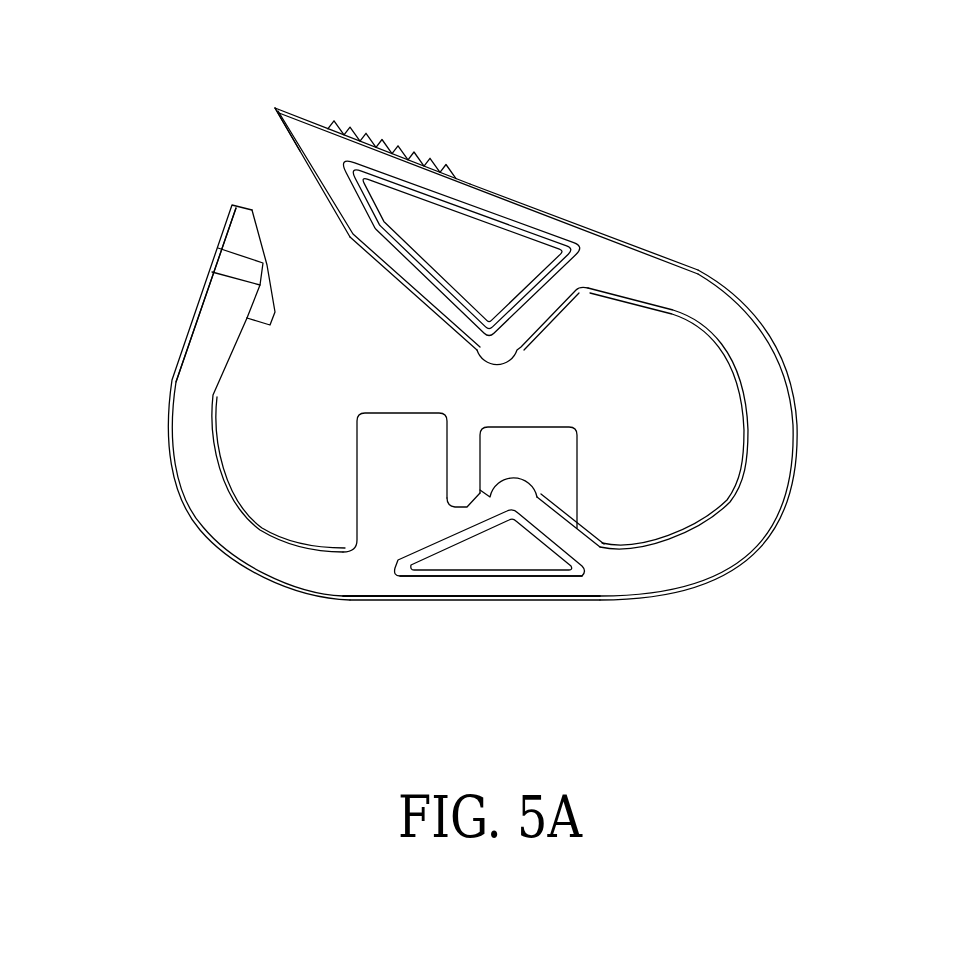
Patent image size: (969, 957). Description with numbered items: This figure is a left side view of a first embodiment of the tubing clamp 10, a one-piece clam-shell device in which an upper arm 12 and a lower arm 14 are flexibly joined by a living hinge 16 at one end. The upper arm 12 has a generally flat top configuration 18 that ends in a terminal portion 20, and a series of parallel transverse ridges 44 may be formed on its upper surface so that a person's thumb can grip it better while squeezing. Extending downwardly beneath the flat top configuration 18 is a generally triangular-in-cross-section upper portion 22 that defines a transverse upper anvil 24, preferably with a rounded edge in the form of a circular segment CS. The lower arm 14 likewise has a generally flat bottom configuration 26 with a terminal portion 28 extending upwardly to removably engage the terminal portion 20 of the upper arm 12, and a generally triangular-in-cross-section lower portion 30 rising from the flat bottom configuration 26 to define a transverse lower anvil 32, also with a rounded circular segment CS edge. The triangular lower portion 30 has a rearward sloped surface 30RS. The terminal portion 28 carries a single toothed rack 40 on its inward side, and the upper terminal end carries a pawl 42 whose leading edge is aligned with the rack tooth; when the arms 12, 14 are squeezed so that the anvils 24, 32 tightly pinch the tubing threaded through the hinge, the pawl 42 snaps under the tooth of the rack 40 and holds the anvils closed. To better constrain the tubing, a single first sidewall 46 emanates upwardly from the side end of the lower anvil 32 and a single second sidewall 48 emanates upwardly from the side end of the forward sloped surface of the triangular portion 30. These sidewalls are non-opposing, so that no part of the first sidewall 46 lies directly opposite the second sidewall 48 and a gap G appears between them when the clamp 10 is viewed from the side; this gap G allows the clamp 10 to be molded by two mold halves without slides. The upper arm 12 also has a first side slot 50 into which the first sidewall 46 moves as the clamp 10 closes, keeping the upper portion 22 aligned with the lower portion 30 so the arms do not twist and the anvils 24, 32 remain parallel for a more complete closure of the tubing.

The tubing clamp 10 is at (776, 125).
The upper arm 12 is at (570, 194).
The lower arm 14 is at (512, 625).
The living hinge 16 is at (810, 327).
The flat top configuration 18 is at (583, 240).
The terminal portion 20 is at (284, 121).
The upper portion 22 is at (472, 197).
The upper anvil 24 is at (490, 330).
The flat bottom configuration 26 is at (435, 588).
The terminal portion 28 is at (187, 340).
The lower portion 30 is at (562, 605).
The rearward sloped surface 30RS is at (527, 498).
The lower anvil 32 is at (523, 495).
The toothed rack 40 is at (260, 307).
The pawl 42 is at (282, 122).
The parallel transverse ridges 44 is at (383, 133).
The first sidewall 46 is at (528, 477).
The second sidewall 48 is at (395, 482).
The first side slot 50 is at (443, 313).
The circular segment CS is at (517, 355).
The gap G is at (466, 450).